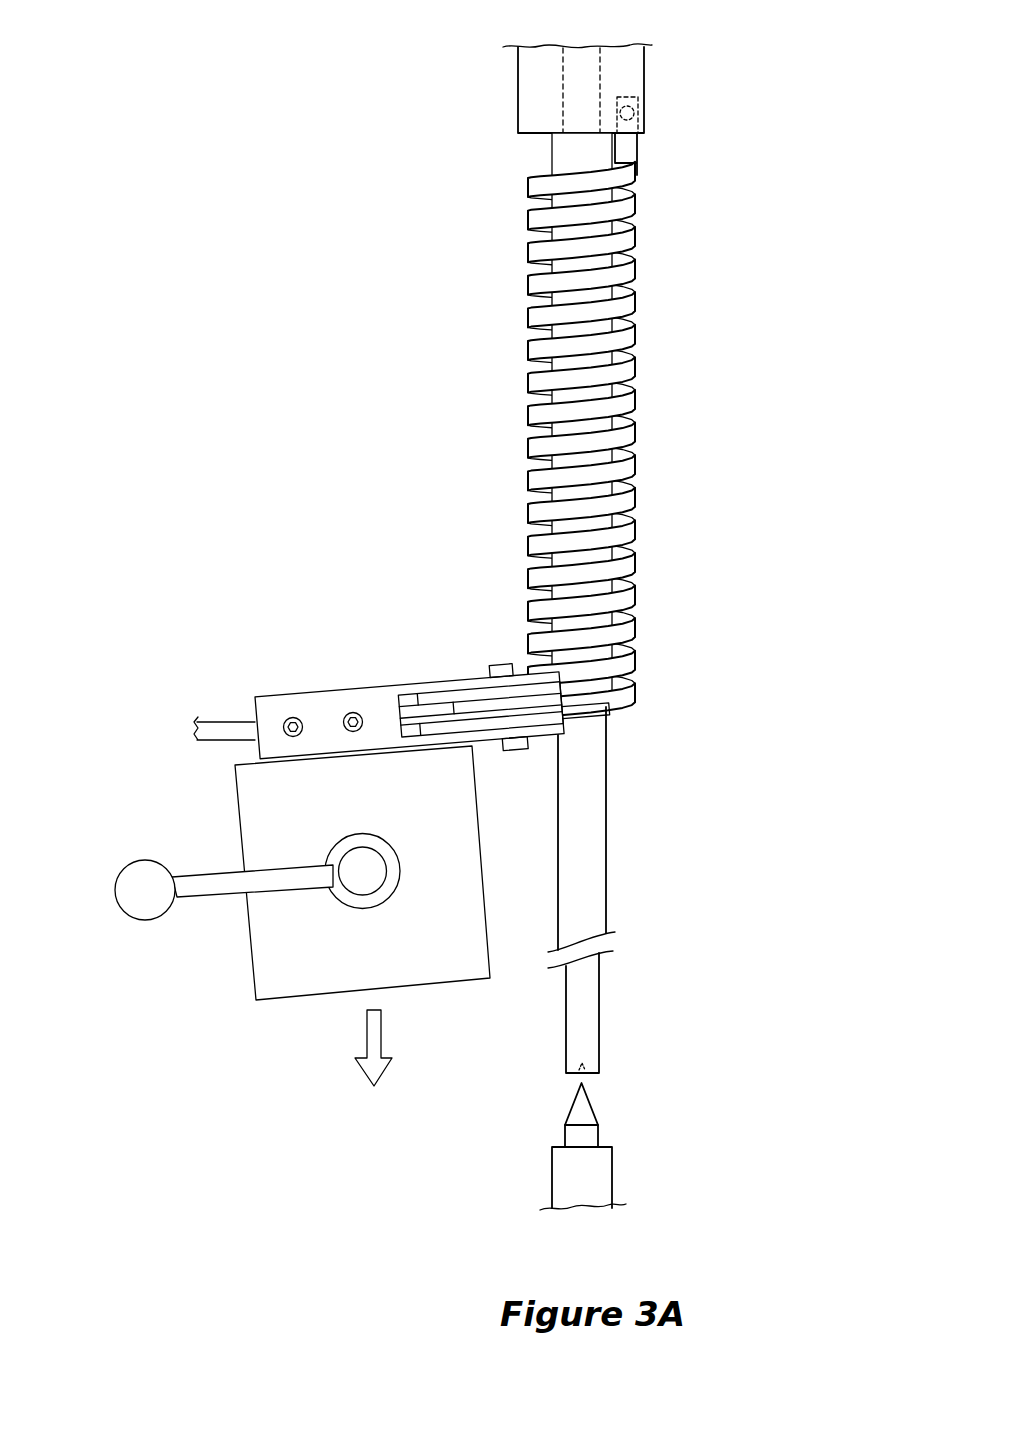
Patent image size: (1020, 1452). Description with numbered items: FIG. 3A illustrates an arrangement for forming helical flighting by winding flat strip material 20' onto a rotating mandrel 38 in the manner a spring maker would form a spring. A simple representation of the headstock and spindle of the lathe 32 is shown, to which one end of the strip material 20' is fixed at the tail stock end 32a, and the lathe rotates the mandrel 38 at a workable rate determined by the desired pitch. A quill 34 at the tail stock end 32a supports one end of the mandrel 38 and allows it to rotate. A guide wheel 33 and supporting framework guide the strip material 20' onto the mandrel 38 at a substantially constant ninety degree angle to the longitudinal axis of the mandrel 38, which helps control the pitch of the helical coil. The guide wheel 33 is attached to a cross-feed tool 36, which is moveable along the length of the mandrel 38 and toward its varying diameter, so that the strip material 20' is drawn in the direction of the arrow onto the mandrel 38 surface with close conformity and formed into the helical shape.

The lathe 32 is at (645, 65).
The tail stock end 32a is at (638, 111).
The strip material 20' is at (446, 436).
The guide wheel 33 is at (587, 713).
The mandrel 38 is at (587, 867).
The cross-feed tool 36 is at (278, 955).
The quill 34 is at (587, 1112).